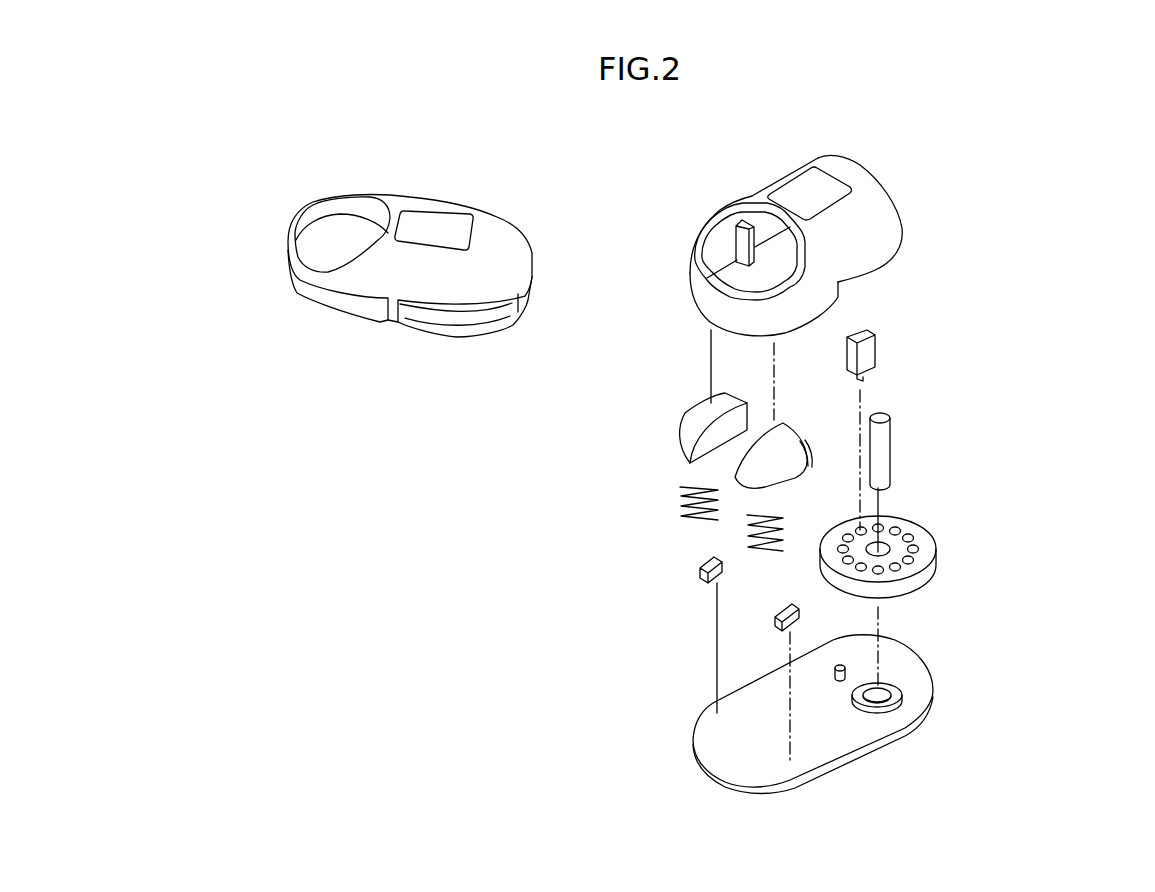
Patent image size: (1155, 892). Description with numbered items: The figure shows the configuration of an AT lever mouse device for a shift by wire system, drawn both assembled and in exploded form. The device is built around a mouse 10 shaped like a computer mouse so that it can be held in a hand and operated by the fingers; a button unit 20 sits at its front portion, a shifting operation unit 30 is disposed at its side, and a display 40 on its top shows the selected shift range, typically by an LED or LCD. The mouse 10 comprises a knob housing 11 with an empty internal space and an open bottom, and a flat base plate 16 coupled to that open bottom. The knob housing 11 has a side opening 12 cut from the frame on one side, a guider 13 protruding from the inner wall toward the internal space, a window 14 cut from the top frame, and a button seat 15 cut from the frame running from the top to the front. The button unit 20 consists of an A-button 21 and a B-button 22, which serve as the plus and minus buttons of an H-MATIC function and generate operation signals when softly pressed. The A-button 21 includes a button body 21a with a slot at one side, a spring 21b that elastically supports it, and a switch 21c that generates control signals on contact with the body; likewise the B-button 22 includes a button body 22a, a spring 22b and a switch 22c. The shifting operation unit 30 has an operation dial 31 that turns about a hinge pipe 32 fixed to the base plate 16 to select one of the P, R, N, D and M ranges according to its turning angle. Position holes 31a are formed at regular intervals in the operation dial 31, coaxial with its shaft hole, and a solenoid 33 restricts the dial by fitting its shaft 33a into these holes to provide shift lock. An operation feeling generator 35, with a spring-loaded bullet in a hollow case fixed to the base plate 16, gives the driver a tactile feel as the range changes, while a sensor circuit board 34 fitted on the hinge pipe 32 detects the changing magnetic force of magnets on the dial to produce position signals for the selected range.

The mouse 10 is at (668, 242).
The knob housing 11 is at (857, 243).
The side opening 12 is at (873, 273).
The guider 13 is at (752, 247).
The window 14 is at (820, 187).
The button seat 15 is at (732, 284).
The base plate 16 is at (862, 735).
The button unit 20 is at (519, 423).
The A-button 21 is at (529, 446).
The button body 21a is at (770, 477).
The spring 21b is at (762, 556).
The switch 21c is at (776, 610).
The B-button 22 is at (515, 353).
The button body 22a is at (700, 418).
The spring 22b is at (690, 487).
The switch 22c is at (703, 563).
The shifting operation unit 30 is at (752, 508).
The operation dial 31 is at (944, 559).
The position holes 31a is at (895, 532).
The hinge pipe 32 is at (883, 445).
The solenoid 33 is at (951, 391).
The shaft 33a is at (862, 380).
The sensor circuit board 34 is at (954, 693).
The operation feeling generator 35 is at (842, 664).
The display 40 is at (438, 226).